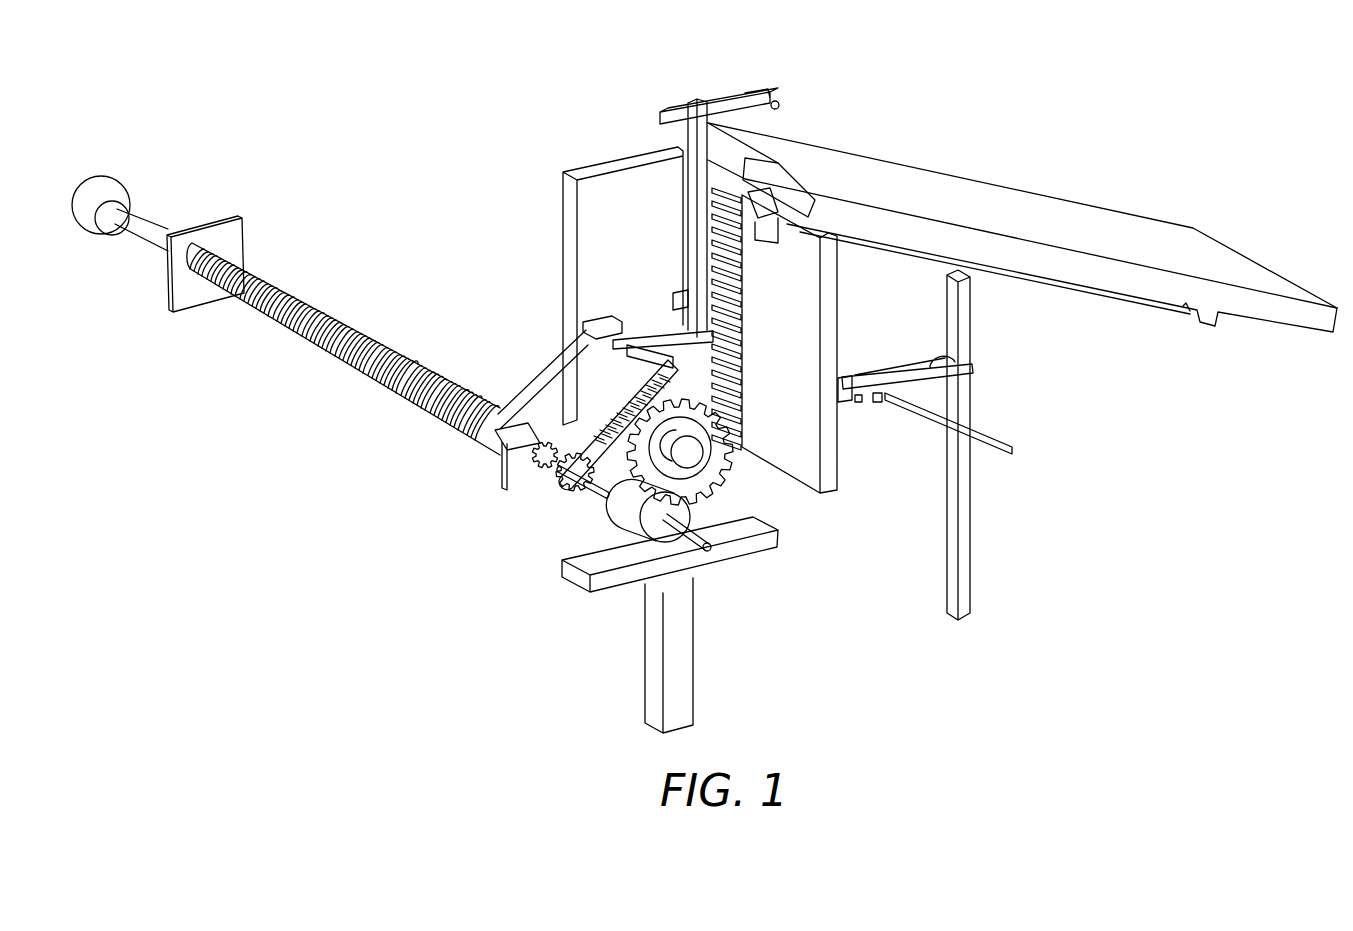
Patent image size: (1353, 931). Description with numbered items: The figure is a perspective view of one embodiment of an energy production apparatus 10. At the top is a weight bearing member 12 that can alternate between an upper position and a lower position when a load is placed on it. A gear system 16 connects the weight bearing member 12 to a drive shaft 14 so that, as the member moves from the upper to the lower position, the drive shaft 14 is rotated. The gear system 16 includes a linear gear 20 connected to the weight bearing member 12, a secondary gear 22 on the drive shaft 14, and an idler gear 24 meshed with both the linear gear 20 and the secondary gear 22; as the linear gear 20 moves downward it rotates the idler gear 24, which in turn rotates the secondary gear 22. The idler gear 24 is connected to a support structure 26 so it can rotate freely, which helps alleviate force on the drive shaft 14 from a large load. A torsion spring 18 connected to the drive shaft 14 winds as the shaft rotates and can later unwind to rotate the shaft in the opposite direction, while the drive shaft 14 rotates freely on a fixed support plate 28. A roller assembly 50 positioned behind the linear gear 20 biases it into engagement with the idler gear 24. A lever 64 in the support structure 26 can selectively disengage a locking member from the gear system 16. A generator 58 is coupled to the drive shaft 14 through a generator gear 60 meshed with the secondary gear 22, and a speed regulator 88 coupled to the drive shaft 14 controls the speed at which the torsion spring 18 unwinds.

The energy production apparatus 10 is at (310, 495).
The weight bearing member 12 is at (1080, 200).
The drive shaft 14 is at (138, 220).
The gear system 16 is at (799, 539).
The torsion spring 18 is at (305, 303).
The linear gear 20 is at (840, 325).
The secondary gear 22 is at (550, 500).
The idler gear 24 is at (727, 478).
The support structure 26 is at (622, 165).
The fixed support plate 28 is at (188, 288).
The roller assembly 50 is at (895, 395).
The generator 58 is at (647, 521).
The generator gear 60 is at (503, 480).
The lever 64 is at (668, 110).
The speed regulator 88 is at (95, 188).